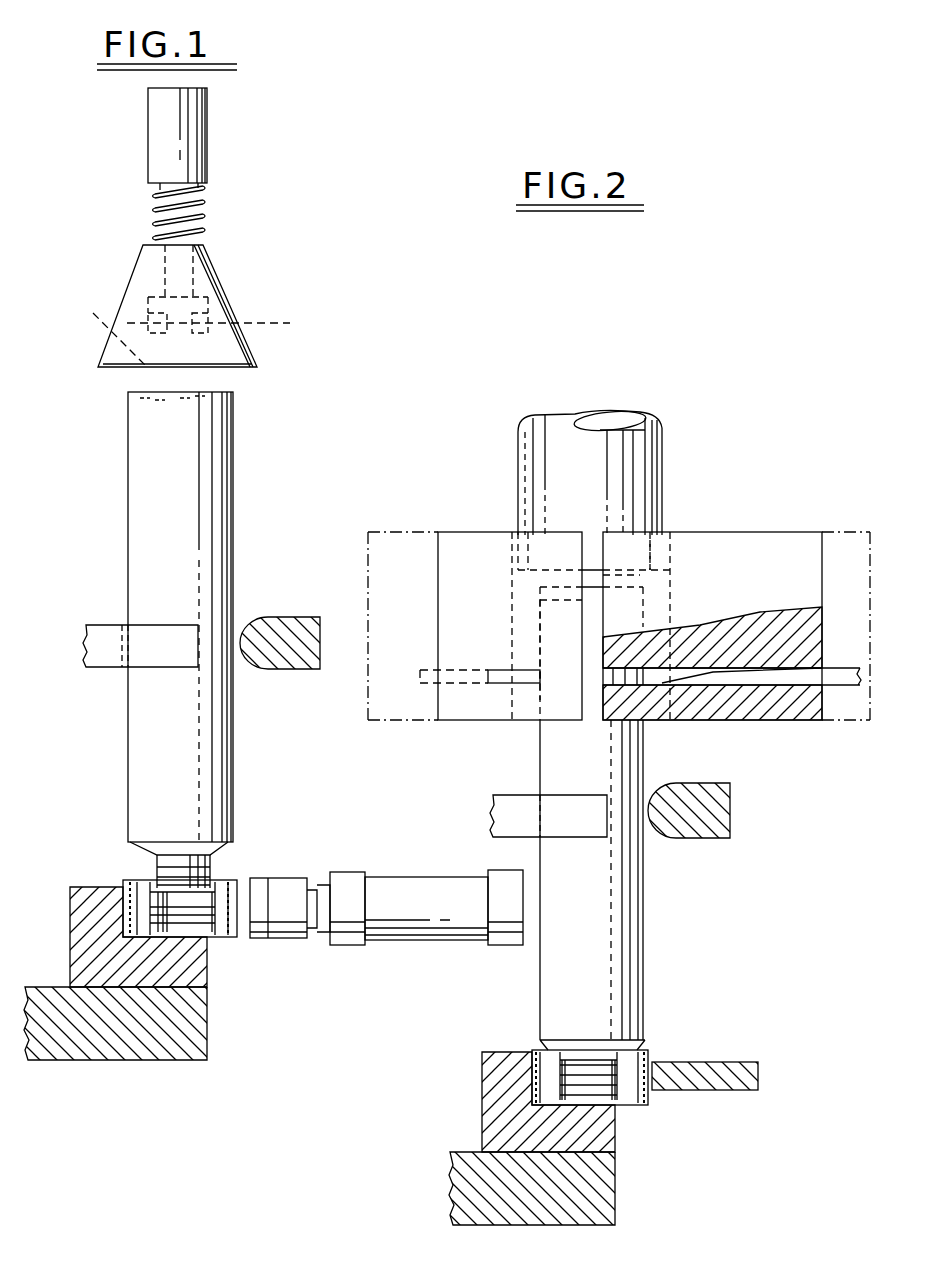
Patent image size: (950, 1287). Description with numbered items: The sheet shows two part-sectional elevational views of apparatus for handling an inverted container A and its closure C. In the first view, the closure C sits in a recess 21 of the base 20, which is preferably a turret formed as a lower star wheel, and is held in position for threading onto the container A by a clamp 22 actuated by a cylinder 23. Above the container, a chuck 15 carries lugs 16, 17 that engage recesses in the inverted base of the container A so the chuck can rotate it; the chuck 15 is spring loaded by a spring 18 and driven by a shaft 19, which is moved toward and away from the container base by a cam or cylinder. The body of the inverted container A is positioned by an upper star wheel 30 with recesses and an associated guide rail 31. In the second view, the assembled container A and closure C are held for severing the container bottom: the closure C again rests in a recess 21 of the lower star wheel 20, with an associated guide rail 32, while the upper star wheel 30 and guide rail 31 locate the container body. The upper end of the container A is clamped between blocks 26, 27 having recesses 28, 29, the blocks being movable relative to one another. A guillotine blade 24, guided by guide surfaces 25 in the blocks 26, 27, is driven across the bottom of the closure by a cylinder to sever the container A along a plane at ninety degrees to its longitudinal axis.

In FIG. 1, the chuck 15 is at (227, 287).
In FIG. 1, the lug 16 is at (135, 327).
In FIG. 1, the lug 17 is at (225, 292).
In FIG. 1, the spring 18 is at (217, 221).
In FIG. 1, the shaft 19 is at (200, 138).
In FIG. 1, the base 20 is at (80, 942).
In FIG. 2, the base 20 is at (490, 1112).
In FIG. 1, the recess 21 is at (132, 887).
In FIG. 2, the recess 21 is at (540, 1052).
In FIG. 1, the clamp 22 is at (283, 937).
In FIG. 1, the cylinder 23 is at (383, 928).
In FIG. 2, the guillotine blade 24 is at (843, 680).
In FIG. 2, the guide surface 25 is at (812, 673).
In FIG. 2, the block 26 is at (473, 545).
In FIG. 2, the block 27 is at (743, 545).
In FIG. 2, the recess 28 is at (520, 617).
In FIG. 2, the recess 29 is at (668, 596).
In FIG. 1, the upper star wheel 30 is at (107, 657).
In FIG. 2, the upper star wheel 30 is at (498, 818).
In FIG. 1, the guide rail 31 is at (287, 660).
In FIG. 2, the guide rail 31 is at (697, 827).
In FIG. 2, the guide rail 32 is at (707, 1092).
In FIG. 1, the container A is at (230, 570).
In FIG. 2, the container A is at (645, 918).
In FIG. 1, the closure C is at (237, 890).
In FIG. 2, the closure C is at (648, 1052).